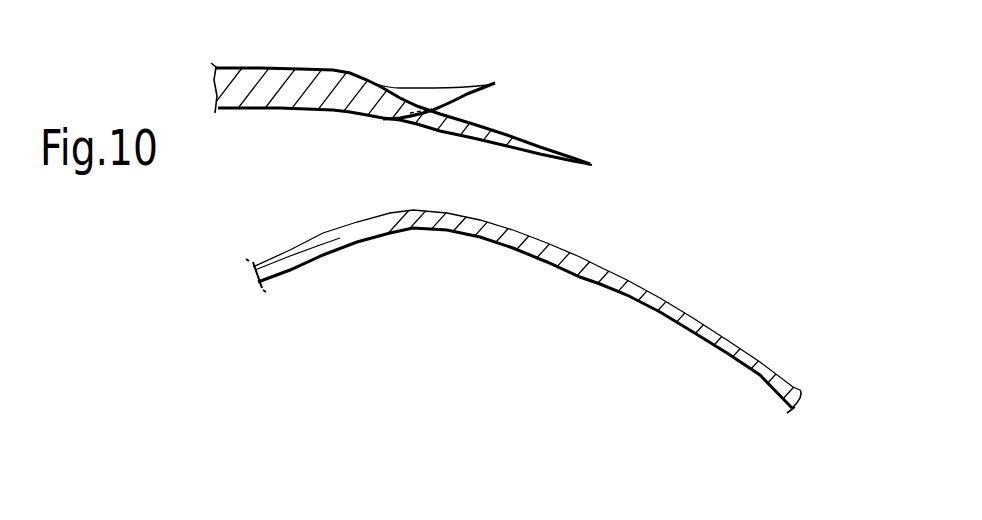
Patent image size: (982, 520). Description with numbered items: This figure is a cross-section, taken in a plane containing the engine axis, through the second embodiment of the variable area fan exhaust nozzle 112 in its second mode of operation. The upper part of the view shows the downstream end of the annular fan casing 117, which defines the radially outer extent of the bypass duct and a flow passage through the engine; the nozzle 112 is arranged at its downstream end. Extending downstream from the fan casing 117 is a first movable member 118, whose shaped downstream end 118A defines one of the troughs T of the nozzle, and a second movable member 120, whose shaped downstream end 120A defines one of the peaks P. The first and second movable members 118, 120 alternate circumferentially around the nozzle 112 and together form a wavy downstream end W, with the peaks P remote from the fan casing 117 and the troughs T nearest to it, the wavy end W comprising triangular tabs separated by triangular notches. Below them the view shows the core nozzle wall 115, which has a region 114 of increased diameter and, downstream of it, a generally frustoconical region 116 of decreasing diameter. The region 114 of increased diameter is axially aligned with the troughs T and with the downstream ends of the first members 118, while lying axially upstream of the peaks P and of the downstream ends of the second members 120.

The variable area fan exhaust nozzle 112 is at (706, 146).
The region of increased diameter 114 is at (340, 238).
The core nozzle wall 115 is at (714, 334).
The region of decreasing diameter 116 is at (617, 278).
The fan casing 117 is at (253, 82).
The first movable member 118 is at (410, 88).
The shaped downstream end of first movable member 118A is at (472, 87).
The second movable member 120 is at (468, 137).
The shaped downstream end of second movable member 120A is at (538, 147).
The trough T is at (495, 83).
The peak P is at (593, 165).
The wavy downstream end W is at (675, 97).